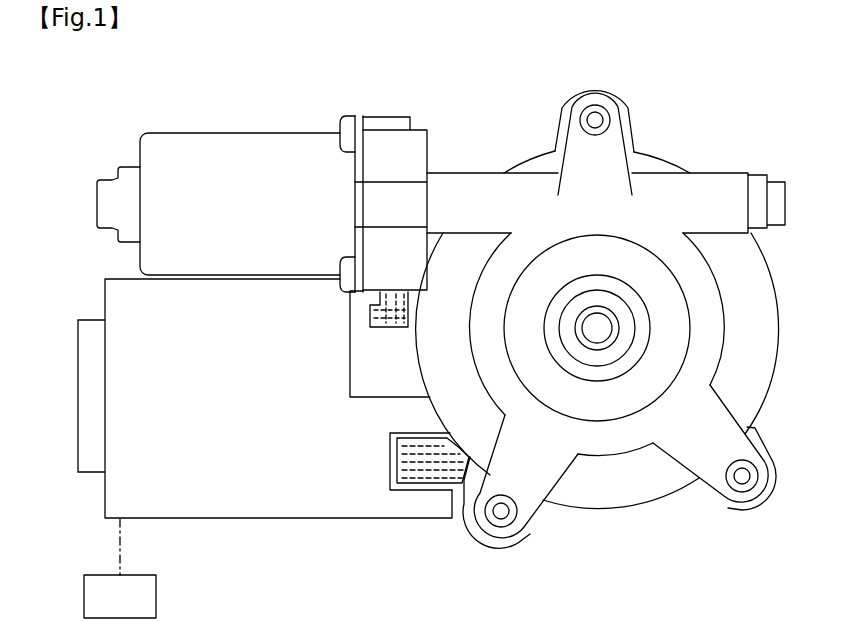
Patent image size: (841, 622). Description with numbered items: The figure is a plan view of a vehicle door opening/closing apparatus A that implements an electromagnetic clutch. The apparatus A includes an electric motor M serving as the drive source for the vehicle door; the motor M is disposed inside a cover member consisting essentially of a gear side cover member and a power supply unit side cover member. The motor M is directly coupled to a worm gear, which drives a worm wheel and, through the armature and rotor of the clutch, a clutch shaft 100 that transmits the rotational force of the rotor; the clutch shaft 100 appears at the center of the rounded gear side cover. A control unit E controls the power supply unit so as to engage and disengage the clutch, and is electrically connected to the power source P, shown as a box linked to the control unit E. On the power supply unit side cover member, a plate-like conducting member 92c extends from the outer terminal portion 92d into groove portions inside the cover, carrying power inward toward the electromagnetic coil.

The vehicle door opening/closing apparatus A is at (726, 131).
The electric motor M is at (205, 133).
The control unit E is at (242, 514).
The power source P is at (120, 568).
The clutch shaft 100 is at (597, 313).
The conducting member 92c is at (397, 469).
The outer terminal portion 92d is at (418, 483).